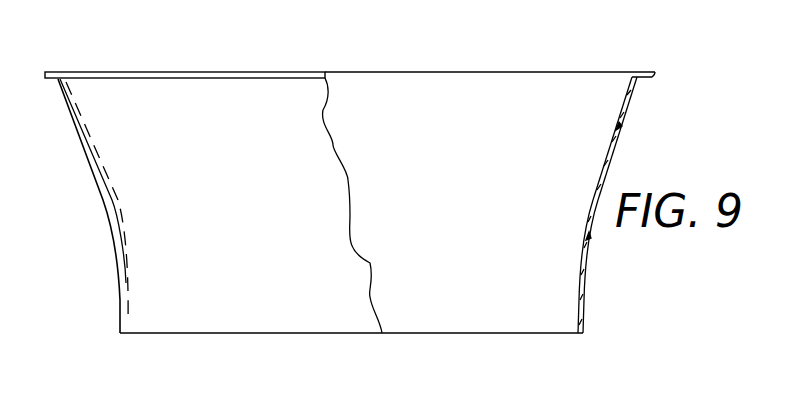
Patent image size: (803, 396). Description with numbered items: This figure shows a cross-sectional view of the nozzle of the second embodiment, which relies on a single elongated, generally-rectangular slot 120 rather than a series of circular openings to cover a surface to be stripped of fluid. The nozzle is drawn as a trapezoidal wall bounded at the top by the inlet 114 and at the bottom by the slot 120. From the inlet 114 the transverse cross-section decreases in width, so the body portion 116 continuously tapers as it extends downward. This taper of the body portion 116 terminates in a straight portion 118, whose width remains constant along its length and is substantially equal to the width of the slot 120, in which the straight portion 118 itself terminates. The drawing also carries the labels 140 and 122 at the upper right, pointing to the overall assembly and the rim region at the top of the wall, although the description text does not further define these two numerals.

The container 140 is at (612, 63).
The inlet 114 is at (457, 88).
The rim 122 is at (652, 76).
The body portion 116 is at (607, 157).
The straight portion 118 is at (584, 248).
The elongated, generally-rectangular slot 120 is at (532, 323).